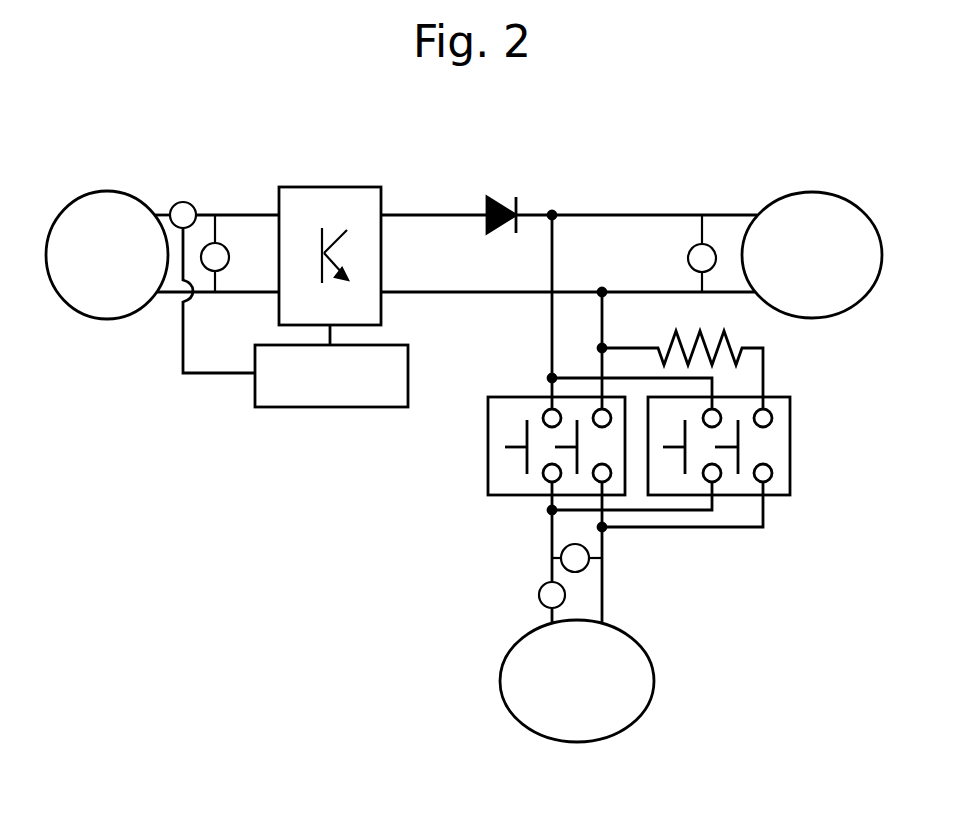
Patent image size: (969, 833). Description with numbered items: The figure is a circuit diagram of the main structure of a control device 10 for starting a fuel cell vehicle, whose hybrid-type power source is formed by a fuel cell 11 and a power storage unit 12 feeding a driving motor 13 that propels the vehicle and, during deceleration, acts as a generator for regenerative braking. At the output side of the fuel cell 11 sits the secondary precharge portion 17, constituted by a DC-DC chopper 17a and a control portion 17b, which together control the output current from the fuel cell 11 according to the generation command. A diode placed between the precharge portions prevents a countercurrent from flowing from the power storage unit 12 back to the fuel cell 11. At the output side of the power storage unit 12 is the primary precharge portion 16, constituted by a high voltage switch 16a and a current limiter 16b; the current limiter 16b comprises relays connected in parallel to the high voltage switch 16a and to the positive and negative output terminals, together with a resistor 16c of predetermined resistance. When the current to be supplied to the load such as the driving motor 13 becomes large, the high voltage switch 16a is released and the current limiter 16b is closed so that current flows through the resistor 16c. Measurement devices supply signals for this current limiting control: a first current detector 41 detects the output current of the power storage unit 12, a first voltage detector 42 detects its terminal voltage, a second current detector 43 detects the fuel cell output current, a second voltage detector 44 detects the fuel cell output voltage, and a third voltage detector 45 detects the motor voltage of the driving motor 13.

The control device 10 is at (722, 152).
The fuel cell 11 is at (130, 192).
The power storage unit 12 is at (652, 706).
The driving motor 13 is at (818, 193).
The primary precharge portion 16 is at (777, 547).
The high voltage switch 16a is at (488, 460).
The current limiter 16b is at (790, 438).
The resistor 16c is at (722, 333).
The secondary precharge portion 17 is at (333, 173).
The DC-DC chopper 17a is at (383, 197).
The control portion 17b is at (295, 408).
The first current detector 41 is at (536, 592).
The first voltage detector 42 is at (560, 553).
The second current detector 43 is at (188, 202).
The second voltage detector 44 is at (218, 245).
The third voltage detector 45 is at (713, 247).